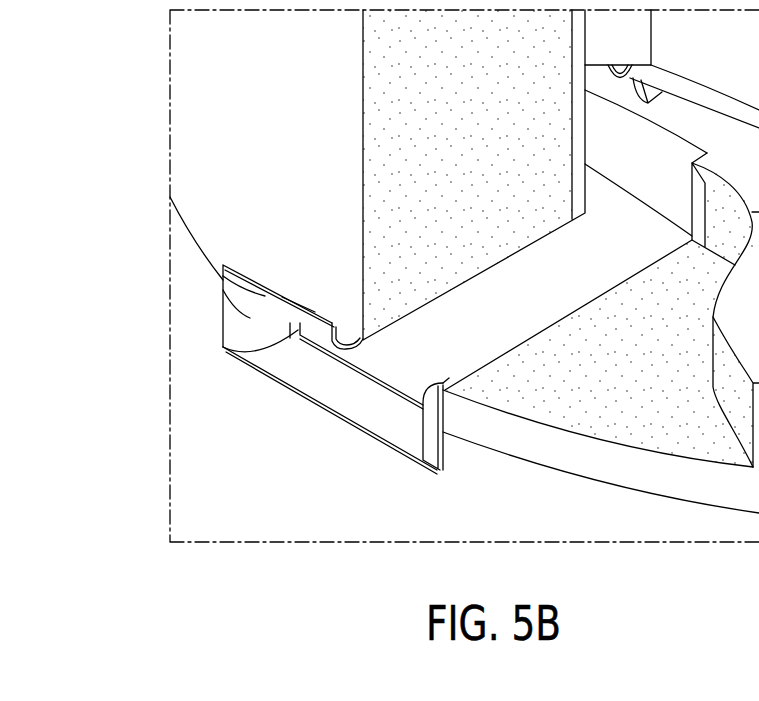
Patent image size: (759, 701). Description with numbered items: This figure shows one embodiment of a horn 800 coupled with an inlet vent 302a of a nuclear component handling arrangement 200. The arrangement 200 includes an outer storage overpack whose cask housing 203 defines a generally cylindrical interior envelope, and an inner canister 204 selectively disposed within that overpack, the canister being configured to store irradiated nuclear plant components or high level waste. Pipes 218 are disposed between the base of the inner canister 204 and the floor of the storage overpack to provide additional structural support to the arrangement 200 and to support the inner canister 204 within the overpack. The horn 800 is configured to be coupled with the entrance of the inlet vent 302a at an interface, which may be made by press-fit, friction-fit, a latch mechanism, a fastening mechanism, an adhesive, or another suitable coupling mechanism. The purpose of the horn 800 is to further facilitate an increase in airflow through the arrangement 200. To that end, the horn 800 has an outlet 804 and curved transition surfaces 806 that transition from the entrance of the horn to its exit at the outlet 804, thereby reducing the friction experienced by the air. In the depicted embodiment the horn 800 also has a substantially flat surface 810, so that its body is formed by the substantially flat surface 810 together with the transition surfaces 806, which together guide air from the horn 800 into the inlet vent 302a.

The nuclear component handling arrangement 200 is at (137, 137).
The cask housing 203 is at (210, 115).
The inner canister 204 is at (713, 62).
The pipes 218 is at (647, 102).
The inlet vent 302a is at (458, 452).
The horn 800 is at (301, 368).
The outlet 804 is at (445, 360).
The transition surface 806 is at (223, 276).
The substantially flat surface 810 is at (326, 378).